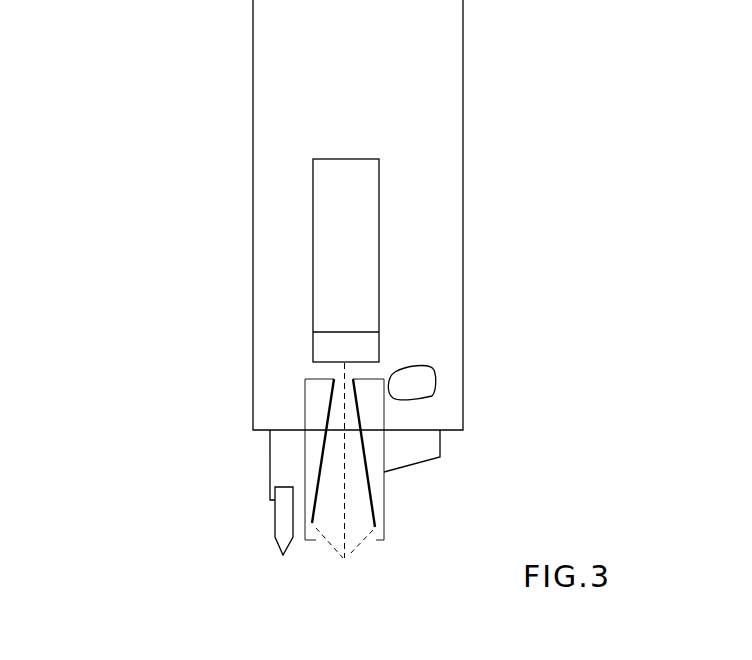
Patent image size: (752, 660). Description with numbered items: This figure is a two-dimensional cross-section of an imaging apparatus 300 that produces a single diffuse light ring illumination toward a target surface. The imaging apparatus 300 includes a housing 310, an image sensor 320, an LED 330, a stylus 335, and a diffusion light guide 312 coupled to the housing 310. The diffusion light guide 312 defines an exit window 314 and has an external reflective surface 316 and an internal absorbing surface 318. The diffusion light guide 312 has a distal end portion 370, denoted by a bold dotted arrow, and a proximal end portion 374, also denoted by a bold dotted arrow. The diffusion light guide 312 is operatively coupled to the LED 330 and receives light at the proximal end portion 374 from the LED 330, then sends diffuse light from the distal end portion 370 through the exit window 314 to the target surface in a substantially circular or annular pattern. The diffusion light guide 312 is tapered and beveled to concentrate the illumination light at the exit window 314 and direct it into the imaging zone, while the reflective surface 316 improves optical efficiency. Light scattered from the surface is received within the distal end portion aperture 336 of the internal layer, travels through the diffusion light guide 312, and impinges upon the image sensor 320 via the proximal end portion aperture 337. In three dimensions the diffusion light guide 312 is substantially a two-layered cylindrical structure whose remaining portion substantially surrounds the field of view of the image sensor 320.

The imaging apparatus 300 is at (86, 52).
The housing 310 is at (252, 100).
The image sensor 320 is at (356, 195).
The proximal end portion aperture 337 is at (346, 378).
The LED 330 is at (424, 379).
The proximal end portion 374 is at (298, 378).
The diffusion light guide 312 is at (316, 408).
The external reflective surface 316 is at (299, 443).
The stylus 335 is at (266, 527).
The internal absorbing surface 318 is at (376, 487).
The distal end portion 370 is at (300, 547).
The distal end portion aperture 336 is at (331, 537).
The exit window 314 is at (368, 545).